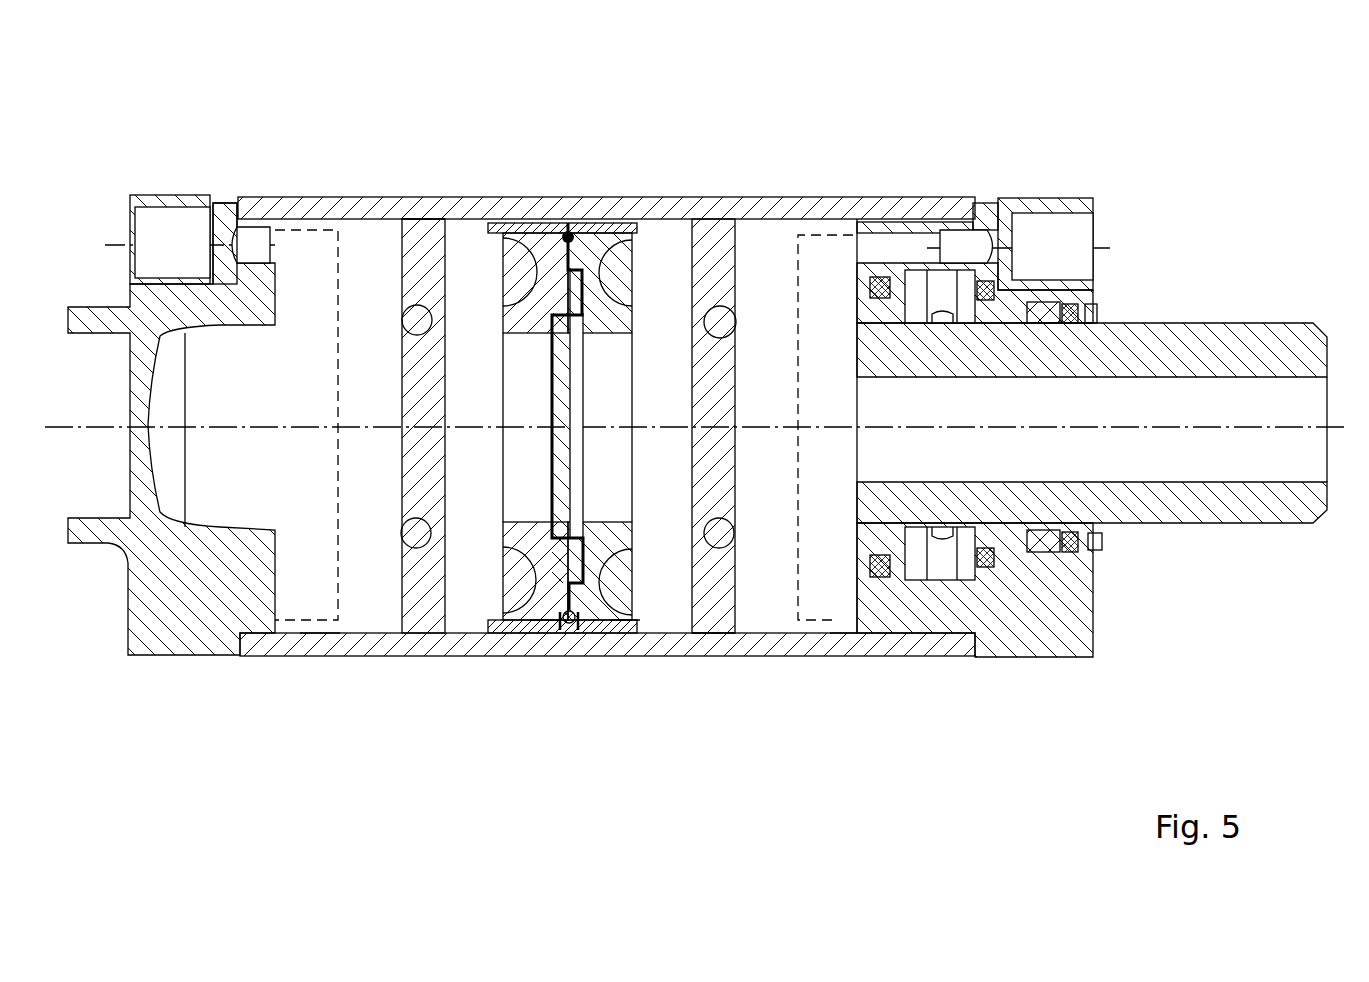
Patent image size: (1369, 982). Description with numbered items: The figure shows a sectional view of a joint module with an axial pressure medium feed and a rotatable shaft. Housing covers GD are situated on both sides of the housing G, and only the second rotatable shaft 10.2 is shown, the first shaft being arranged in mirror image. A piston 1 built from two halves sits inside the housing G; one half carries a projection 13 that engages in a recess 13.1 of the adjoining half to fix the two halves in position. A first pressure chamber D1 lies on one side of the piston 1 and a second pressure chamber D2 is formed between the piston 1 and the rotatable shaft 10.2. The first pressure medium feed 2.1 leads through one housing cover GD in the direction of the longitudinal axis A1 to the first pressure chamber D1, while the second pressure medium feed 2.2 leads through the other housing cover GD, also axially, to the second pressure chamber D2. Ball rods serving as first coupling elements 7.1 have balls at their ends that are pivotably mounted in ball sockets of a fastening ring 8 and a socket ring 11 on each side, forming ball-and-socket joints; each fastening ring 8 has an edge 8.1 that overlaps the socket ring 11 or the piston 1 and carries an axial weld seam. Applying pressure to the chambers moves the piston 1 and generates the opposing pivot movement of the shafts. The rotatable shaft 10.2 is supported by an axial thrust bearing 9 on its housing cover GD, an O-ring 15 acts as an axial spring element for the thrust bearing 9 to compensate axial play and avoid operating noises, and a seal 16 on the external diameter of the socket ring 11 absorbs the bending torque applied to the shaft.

The piston 1 is at (592, 253).
The first pressure medium feed 2.1 is at (175, 228).
The second pressure medium feed 2.2 is at (1020, 230).
The first coupling element 7.1 is at (428, 345).
The fastening ring 8 is at (790, 258).
The edge 8.1 is at (317, 585).
The axial thrust bearing 9 is at (922, 293).
The second rotatable shaft 10.2 is at (1193, 508).
The socket ring 11 is at (319, 585).
The projection 13 is at (566, 622).
The recess 13.1 is at (593, 605).
The O-ring 15 is at (985, 565).
The seal 16 is at (881, 578).
The longitudinal axis A1 is at (1238, 427).
The first pressure chamber D1 is at (430, 245).
The second pressure chamber D2 is at (714, 593).
The housing G is at (272, 208).
The housing cover GD is at (160, 313).